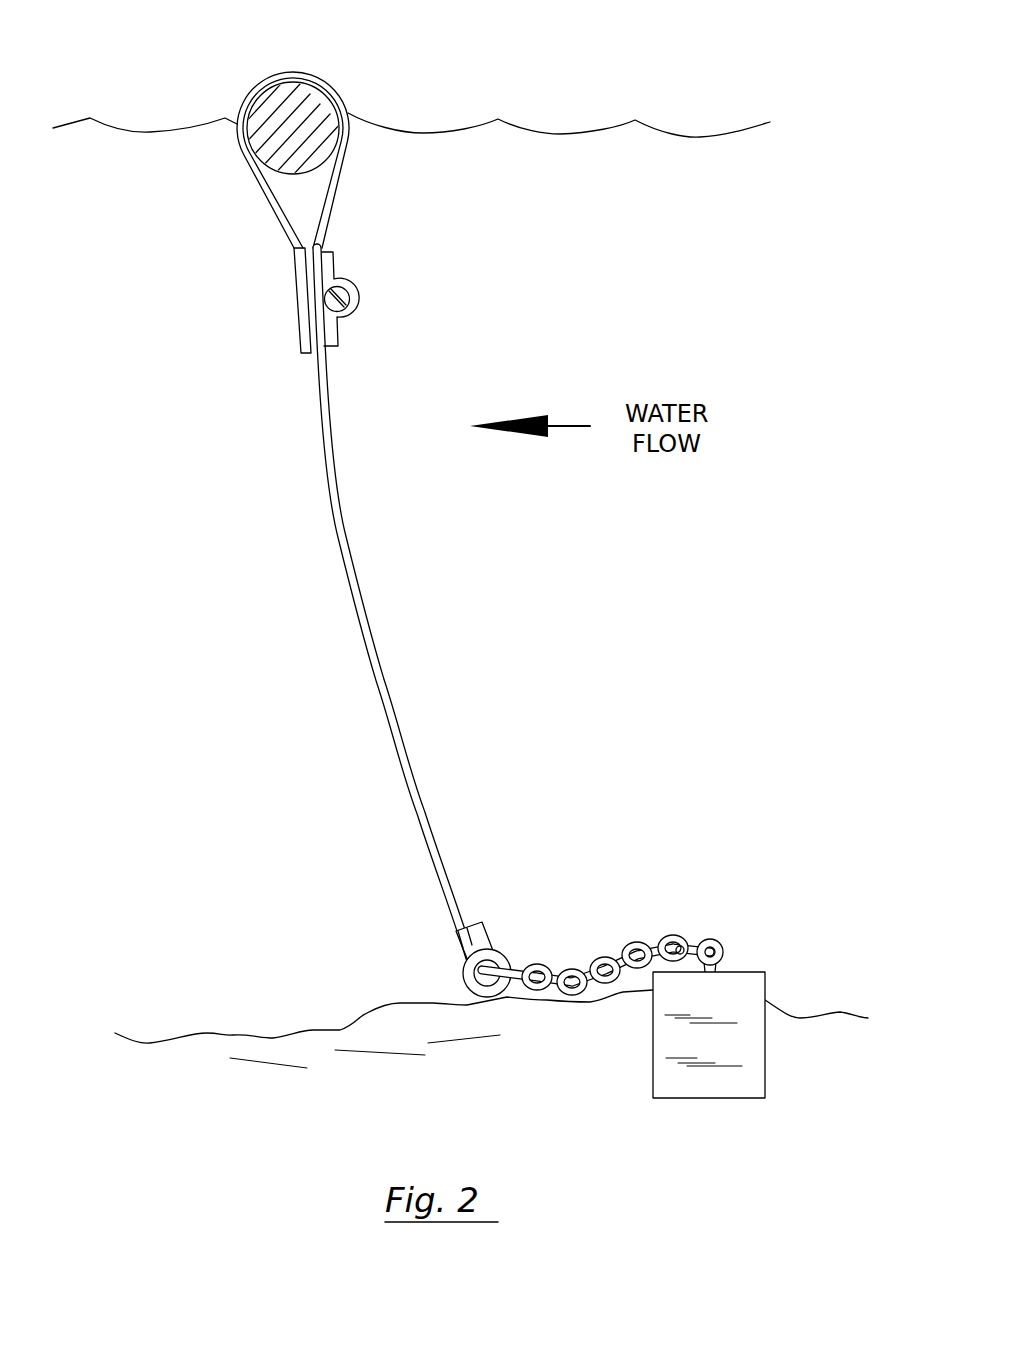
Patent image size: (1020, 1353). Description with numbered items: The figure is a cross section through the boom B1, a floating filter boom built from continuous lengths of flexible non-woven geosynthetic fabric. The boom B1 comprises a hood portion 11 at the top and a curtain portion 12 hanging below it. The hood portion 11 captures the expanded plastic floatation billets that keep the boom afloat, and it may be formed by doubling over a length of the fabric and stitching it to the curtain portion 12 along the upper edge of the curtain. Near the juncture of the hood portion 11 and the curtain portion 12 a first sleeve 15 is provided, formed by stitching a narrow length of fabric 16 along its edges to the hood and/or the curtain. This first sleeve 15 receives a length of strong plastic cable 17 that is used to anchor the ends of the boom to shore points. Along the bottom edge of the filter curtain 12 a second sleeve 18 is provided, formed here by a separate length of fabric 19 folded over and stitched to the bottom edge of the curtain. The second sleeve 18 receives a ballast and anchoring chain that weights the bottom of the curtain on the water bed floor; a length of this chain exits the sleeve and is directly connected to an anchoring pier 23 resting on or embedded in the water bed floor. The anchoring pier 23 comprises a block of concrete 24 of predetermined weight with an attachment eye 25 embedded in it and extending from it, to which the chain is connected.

The boom B1 is at (430, 80).
The hood portion 11 is at (175, 229).
The curtain portion 12 is at (337, 538).
The first sleeve 15 is at (425, 300).
The narrow length of fabric 16 is at (337, 328).
The plastic cable 17 is at (336, 299).
The second sleeve 18 is at (591, 887).
The separate length of fabric 19 is at (463, 952).
The anchoring pier 23 is at (733, 1000).
The block of concrete 24 is at (627, 950).
The attachment eye 25 is at (723, 937).